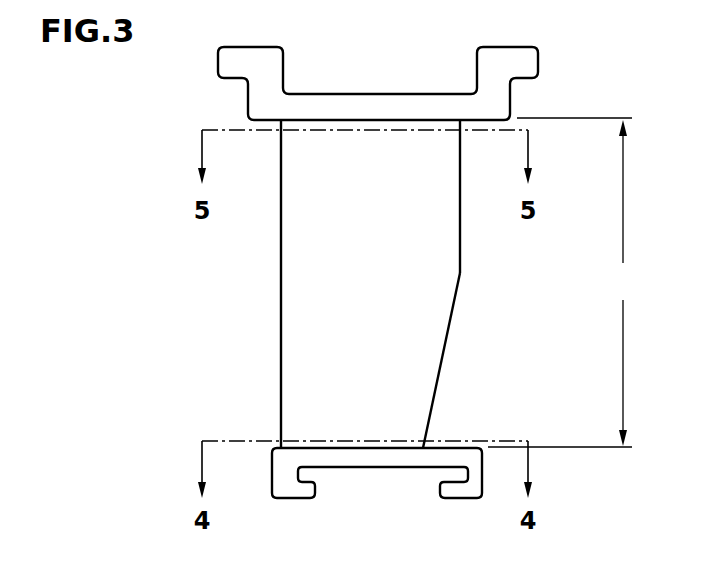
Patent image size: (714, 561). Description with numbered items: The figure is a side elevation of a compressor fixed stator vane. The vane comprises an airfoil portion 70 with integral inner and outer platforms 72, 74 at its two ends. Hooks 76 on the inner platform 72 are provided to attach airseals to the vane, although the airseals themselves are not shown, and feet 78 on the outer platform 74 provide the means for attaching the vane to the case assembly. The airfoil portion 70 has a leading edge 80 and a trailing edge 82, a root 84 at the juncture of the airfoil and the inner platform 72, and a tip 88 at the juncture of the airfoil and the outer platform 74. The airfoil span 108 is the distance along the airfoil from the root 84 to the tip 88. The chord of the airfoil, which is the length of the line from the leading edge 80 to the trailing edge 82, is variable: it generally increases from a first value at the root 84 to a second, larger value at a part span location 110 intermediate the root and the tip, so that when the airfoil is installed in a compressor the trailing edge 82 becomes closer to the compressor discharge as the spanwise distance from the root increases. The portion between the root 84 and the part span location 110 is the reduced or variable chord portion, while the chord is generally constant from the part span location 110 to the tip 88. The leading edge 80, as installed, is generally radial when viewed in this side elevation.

The airfoil portion 70 is at (367, 277).
The inner platform 72 is at (417, 460).
The outer platform 74 is at (370, 104).
The hooks 76 is at (312, 490).
The feet 78 is at (232, 64).
The leading edge 80 is at (284, 340).
The trailing edge 82 is at (462, 206).
The root 84 is at (347, 440).
The tip 88 is at (392, 128).
The airfoil span 108 is at (565, 282).
The part span location 110 is at (460, 272).